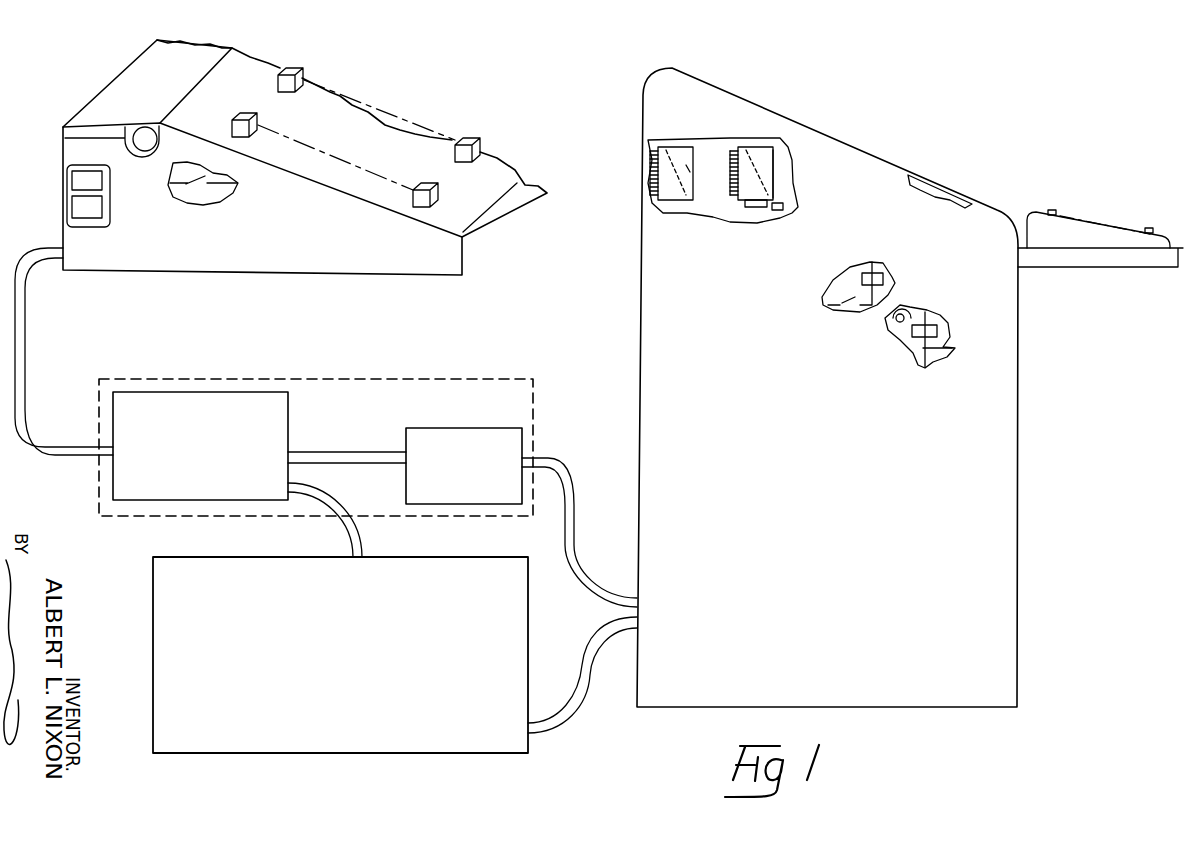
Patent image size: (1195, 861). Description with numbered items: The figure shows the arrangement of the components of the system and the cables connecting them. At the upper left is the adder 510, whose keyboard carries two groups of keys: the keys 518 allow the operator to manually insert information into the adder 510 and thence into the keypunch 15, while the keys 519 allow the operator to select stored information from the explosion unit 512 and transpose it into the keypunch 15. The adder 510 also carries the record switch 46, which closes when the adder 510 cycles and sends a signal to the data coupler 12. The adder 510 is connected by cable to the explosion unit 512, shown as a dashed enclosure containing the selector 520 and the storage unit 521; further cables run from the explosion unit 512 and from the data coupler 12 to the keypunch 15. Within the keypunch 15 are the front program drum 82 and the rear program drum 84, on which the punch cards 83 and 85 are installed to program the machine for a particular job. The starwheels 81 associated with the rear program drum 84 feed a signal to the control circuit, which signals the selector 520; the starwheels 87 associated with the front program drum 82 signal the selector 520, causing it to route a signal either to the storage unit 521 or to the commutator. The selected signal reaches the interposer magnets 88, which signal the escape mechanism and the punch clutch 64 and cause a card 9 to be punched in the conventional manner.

The card 9 is at (944, 192).
The data coupler 12 is at (405, 747).
The keypunch 15 is at (1019, 370).
The record switch 46 is at (193, 178).
The punch clutch 64 is at (902, 315).
The starwheels 81 is at (658, 170).
The front program drum 82 is at (782, 171).
The punch card 83 is at (775, 137).
The rear program drum 84 is at (693, 147).
The punch card 85 is at (688, 167).
The starwheels 87 is at (738, 175).
The interposer magnets 88 is at (883, 280).
The adder 510 is at (377, 268).
The explosion unit 512 is at (518, 379).
The keys 518 is at (470, 138).
The keys 519 is at (241, 118).
The selector 520 is at (488, 428).
The storage unit 521 is at (288, 415).